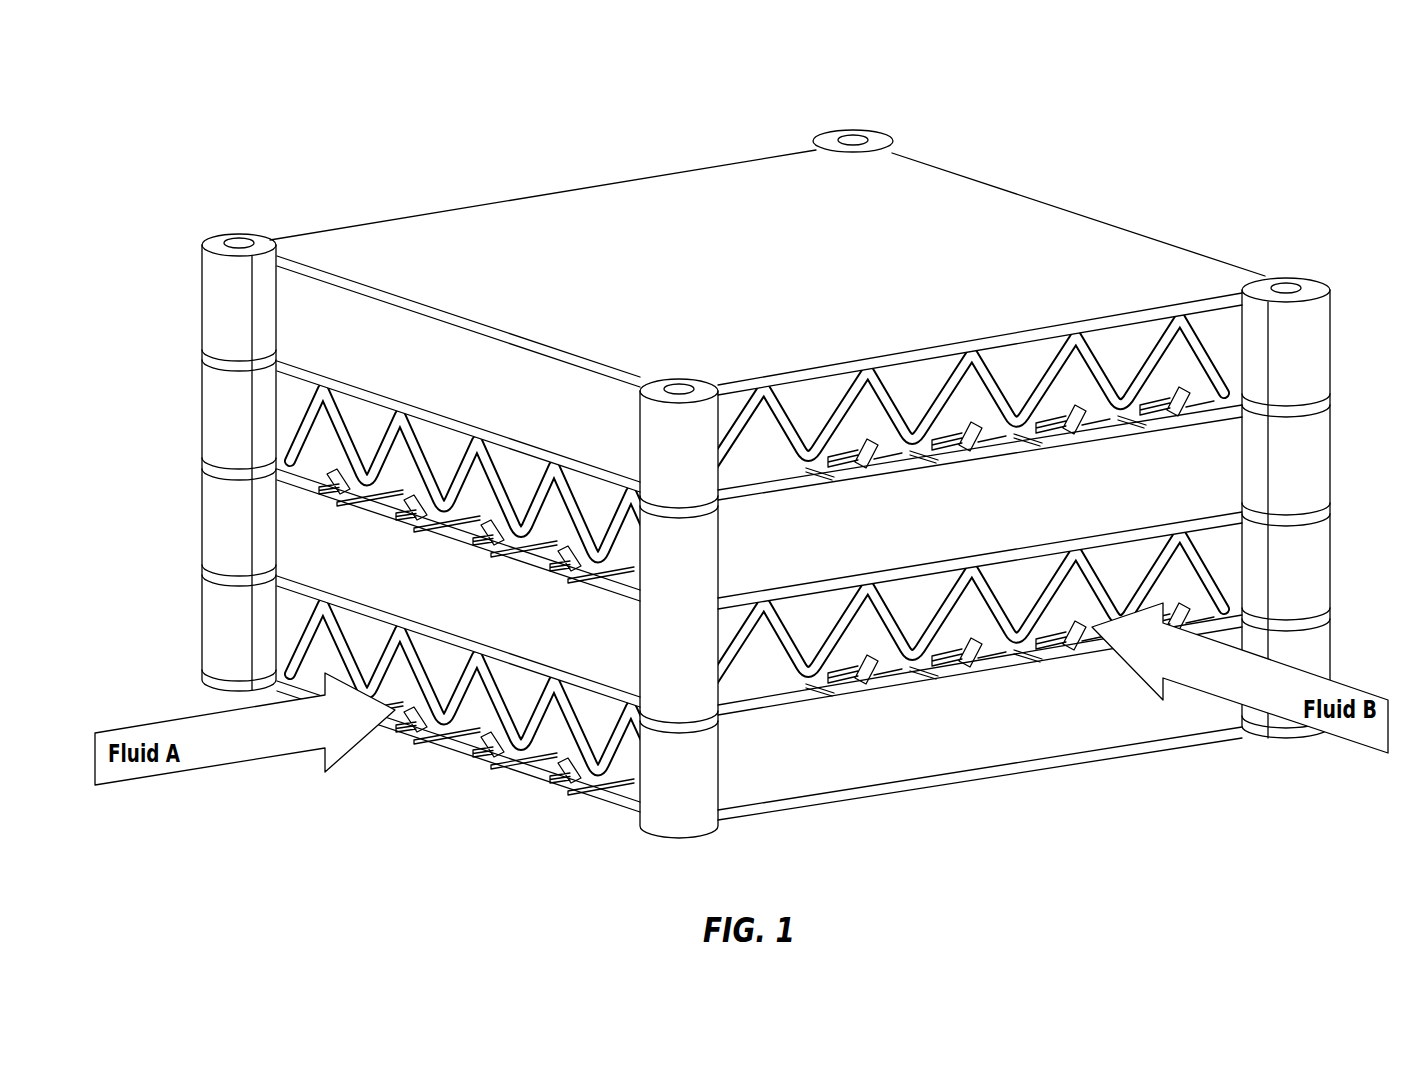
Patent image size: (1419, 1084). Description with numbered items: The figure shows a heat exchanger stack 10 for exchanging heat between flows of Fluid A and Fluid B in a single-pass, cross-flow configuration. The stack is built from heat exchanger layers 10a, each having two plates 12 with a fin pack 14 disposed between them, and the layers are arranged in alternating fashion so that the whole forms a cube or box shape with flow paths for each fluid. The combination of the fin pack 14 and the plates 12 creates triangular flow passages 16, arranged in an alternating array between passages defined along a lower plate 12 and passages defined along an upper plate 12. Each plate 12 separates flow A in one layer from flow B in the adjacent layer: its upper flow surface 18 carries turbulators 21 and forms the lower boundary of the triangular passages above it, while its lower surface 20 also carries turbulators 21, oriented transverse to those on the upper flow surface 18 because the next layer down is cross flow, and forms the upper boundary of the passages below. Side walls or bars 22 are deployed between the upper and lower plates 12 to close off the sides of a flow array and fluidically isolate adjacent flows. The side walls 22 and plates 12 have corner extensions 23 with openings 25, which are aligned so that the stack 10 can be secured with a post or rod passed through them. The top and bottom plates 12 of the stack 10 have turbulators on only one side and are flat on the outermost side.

The heat exchanger stack 10 is at (196, 174).
The heat exchanger layer 10a is at (188, 238).
The plate 12 is at (330, 478).
The fin pack 14 is at (538, 550).
The triangular flow passage 16 is at (428, 432).
The upper flow surface 18 is at (500, 440).
The lower surface 20 is at (390, 470).
The turbulator 21 is at (832, 652).
The side wall 22 is at (331, 342).
The corner extension 23 is at (880, 150).
The opening 25 is at (853, 138).